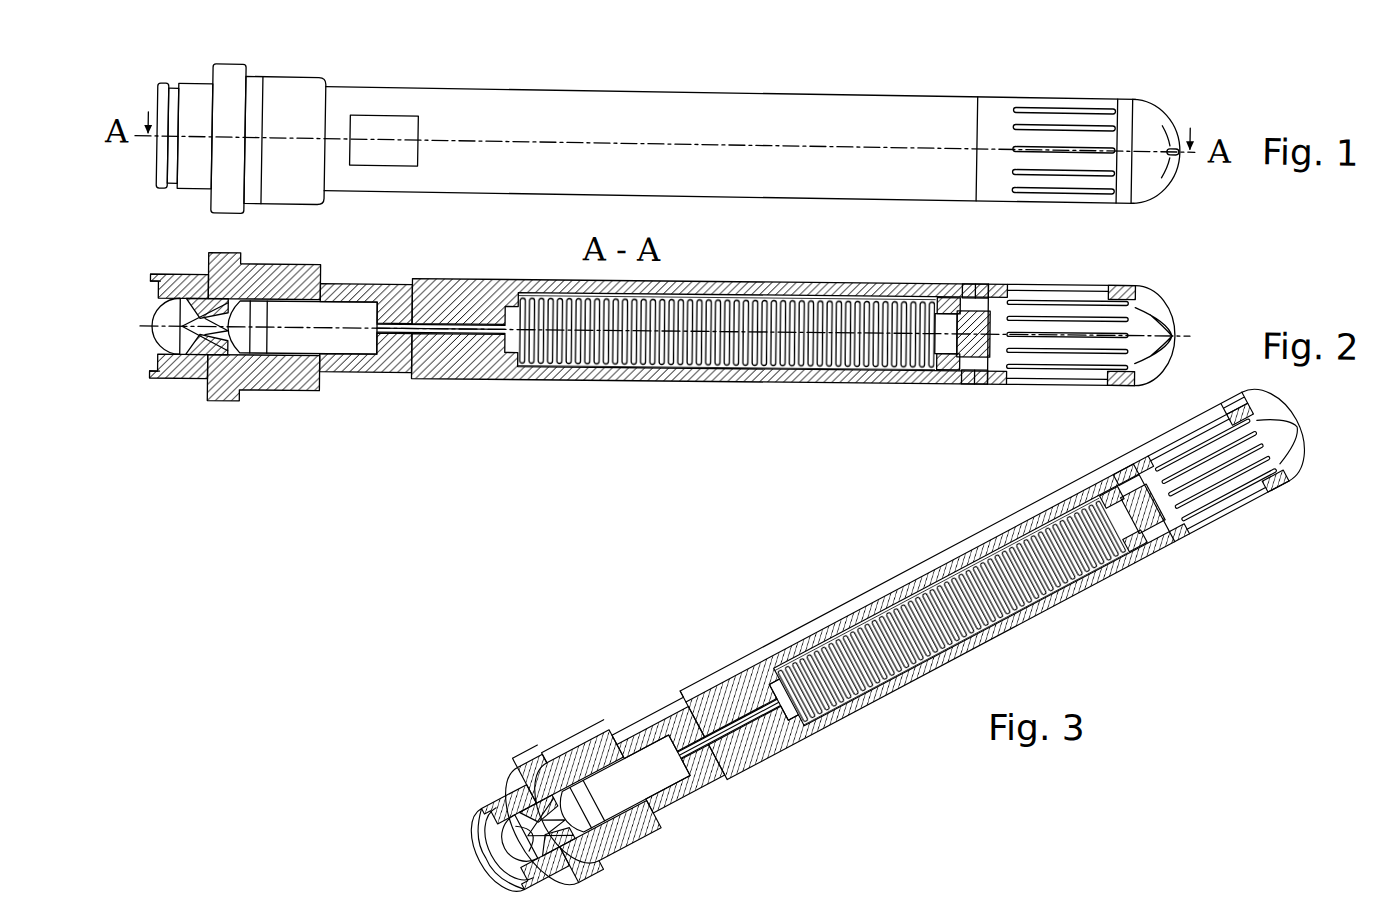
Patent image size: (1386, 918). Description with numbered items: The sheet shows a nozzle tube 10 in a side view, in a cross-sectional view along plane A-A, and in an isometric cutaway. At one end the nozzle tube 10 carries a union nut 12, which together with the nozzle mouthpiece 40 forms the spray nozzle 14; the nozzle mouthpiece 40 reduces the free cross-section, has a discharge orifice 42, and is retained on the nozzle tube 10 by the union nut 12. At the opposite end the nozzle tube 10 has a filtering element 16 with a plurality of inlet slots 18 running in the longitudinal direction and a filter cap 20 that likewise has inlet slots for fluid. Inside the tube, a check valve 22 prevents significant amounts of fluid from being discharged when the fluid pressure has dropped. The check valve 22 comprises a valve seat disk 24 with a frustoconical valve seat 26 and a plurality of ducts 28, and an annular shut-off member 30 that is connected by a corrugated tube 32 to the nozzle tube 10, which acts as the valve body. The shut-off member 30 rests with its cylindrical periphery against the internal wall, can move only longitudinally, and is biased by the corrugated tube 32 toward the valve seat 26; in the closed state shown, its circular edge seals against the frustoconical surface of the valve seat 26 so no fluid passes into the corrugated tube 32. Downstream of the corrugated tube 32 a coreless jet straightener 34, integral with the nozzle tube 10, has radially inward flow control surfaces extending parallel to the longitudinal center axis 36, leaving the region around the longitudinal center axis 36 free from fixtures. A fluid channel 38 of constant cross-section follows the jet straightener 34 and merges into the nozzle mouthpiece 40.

In FIG. 1, the nozzle tube 10 is at (462, 84).
In FIG. 2, the nozzle tube 10 is at (450, 285).
In FIG. 3, the nozzle tube 10 is at (842, 625).
In FIG. 1, the union nut 12 is at (305, 86).
In FIG. 2, the union nut 12 is at (297, 248).
In FIG. 3, the union nut 12 is at (627, 720).
In FIG. 1, the spray nozzle 14 is at (245, 120).
In FIG. 2, the spray nozzle 14 is at (235, 349).
In FIG. 3, the spray nozzle 14 is at (567, 785).
In FIG. 1, the filtering element 16 is at (1092, 124).
In FIG. 2, the filtering element 16 is at (1075, 385).
In FIG. 3, the filtering element 16 is at (1232, 532).
In FIG. 1, the inlet slots 18 is at (1060, 113).
In FIG. 1, the filter cap 20 is at (1152, 100).
In FIG. 2, the check valve 22 is at (943, 341).
In FIG. 2, the valve seat disk 24 is at (992, 355).
In FIG. 2, the valve seat 26 is at (963, 352).
In FIG. 2, the ducts 28 is at (978, 292).
In FIG. 2, the shut-off member 30 is at (950, 300).
In FIG. 2, the corrugated tube 32 is at (638, 365).
In FIG. 3, the corrugated tube 32 is at (878, 690).
In FIG. 2, the jet straightener 34 is at (460, 375).
In FIG. 3, the jet straightener 34 is at (770, 760).
In FIG. 2, the longitudinal center axis 36 is at (350, 335).
In FIG. 2, the fluid channel 38 is at (350, 300).
In FIG. 2, the nozzle mouthpiece 40 is at (205, 345).
In FIG. 3, the nozzle mouthpiece 40 is at (560, 790).
In FIG. 2, the discharge orifice 42 is at (192, 356).